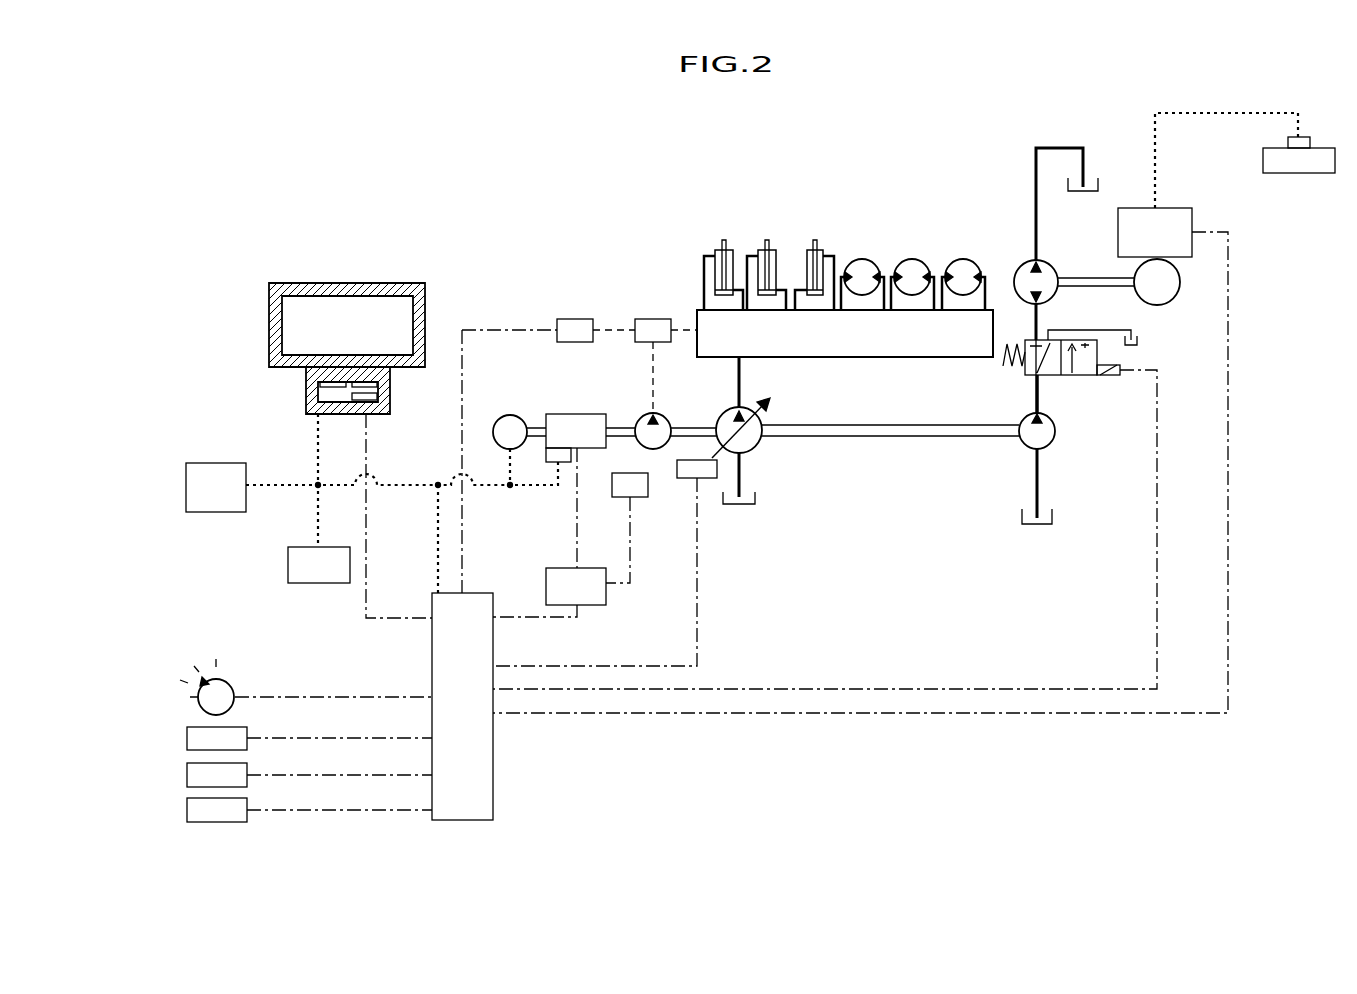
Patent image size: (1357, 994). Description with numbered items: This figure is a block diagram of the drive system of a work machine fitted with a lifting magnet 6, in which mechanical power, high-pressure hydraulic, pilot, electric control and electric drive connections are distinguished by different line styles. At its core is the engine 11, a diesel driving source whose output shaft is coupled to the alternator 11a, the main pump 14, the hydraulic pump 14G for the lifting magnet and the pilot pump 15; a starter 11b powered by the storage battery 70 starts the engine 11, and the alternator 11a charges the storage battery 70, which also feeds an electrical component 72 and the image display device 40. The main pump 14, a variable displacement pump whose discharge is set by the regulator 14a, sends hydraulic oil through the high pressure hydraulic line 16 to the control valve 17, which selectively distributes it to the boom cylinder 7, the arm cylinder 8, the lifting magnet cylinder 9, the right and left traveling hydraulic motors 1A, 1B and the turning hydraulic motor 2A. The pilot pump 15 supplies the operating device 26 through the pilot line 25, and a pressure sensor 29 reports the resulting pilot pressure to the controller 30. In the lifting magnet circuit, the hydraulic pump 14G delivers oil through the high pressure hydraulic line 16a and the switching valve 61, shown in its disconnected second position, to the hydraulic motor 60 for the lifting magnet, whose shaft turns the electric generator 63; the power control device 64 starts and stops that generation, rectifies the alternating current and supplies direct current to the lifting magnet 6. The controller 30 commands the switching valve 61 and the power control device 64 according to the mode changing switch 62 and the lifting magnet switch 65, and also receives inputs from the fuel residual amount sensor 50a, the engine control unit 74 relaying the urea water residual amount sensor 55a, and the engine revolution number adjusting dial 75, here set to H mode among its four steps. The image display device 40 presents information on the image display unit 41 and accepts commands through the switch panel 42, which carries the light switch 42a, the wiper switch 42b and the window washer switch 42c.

The traveling hydraulic motor (for right) 1A is at (863, 258).
The traveling hydraulic motor (for left) 1B is at (912, 258).
The turning hydraulic motor 2A is at (963, 258).
The lifting magnet 6 is at (1315, 148).
The boom cylinder 7 is at (724, 240).
The arm cylinder 8 is at (767, 240).
The lifting magnet cylinder 9 is at (815, 240).
The engine 11 is at (569, 414).
The alternator 11a is at (511, 415).
The starter 11b is at (554, 465).
The main pump 14 is at (758, 446).
The regulator 14a is at (708, 480).
The hydraulic pump for the lifting magnet 14G is at (1052, 416).
The pilot pump 15 is at (641, 448).
The high pressure hydraulic line 16 is at (737, 374).
The high pressure hydraulic line 16a is at (1032, 413).
The control valve 17 is at (905, 359).
The pilot line 25 is at (650, 374).
The operating device 26 is at (666, 318).
The pressure sensor 29 is at (586, 318).
The controller 30 is at (488, 593).
The image display device 40 is at (353, 317).
The image display unit 41 is at (410, 283).
The switch panel 42 is at (352, 335).
The light switch 42a is at (378, 386).
The wiper switch 42b is at (368, 400).
The window washer switch 42c is at (318, 382).
The fuel residual amount sensor 50a is at (188, 810).
The urea water residual amount sensor 55a is at (635, 500).
The hydraulic motor for the lifting magnet 60 is at (1058, 268).
The switching valve 61 is at (1022, 367).
The mode changing switch 62 is at (186, 738).
The electric generator for the lifting magnet 63 is at (1159, 305).
The power control device 64 is at (1177, 208).
The lifting magnet switch 65 is at (186, 775).
The storage battery 70 is at (342, 547).
The electrical component 72 is at (238, 463).
The engine control unit 74 is at (605, 568).
The engine revolution number adjusting dial 75 is at (232, 683).